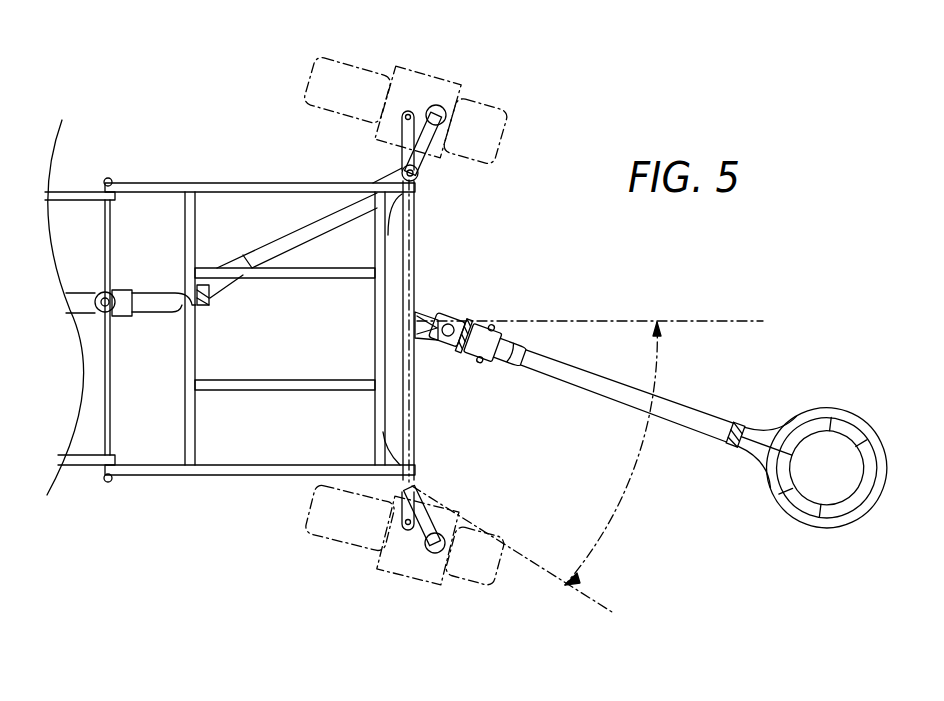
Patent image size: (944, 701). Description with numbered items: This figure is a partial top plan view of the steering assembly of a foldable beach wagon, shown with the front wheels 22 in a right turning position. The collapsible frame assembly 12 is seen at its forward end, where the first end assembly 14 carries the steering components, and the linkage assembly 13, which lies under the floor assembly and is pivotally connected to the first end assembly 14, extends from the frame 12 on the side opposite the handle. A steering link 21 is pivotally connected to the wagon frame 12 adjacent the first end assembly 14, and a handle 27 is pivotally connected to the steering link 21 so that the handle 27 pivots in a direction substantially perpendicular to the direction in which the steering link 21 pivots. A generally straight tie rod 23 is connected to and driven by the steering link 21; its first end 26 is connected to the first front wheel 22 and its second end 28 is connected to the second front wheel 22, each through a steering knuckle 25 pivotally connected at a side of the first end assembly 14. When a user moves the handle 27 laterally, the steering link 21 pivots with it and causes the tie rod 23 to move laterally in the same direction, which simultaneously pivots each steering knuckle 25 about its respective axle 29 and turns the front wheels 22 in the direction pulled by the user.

The collapsible frame assembly 12 is at (208, 475).
The linkage assembly 13 is at (153, 293).
The first end assembly 14 is at (417, 233).
The steering link 21 is at (463, 317).
The front wheel 22 is at (502, 140).
The tie rod 23 is at (405, 145).
The steering knuckle 25 is at (423, 97).
The first end of the tie rod 26 is at (405, 127).
The handle 27 is at (597, 393).
The second end of the tie rod 28 is at (400, 512).
The axle 29 is at (441, 110).